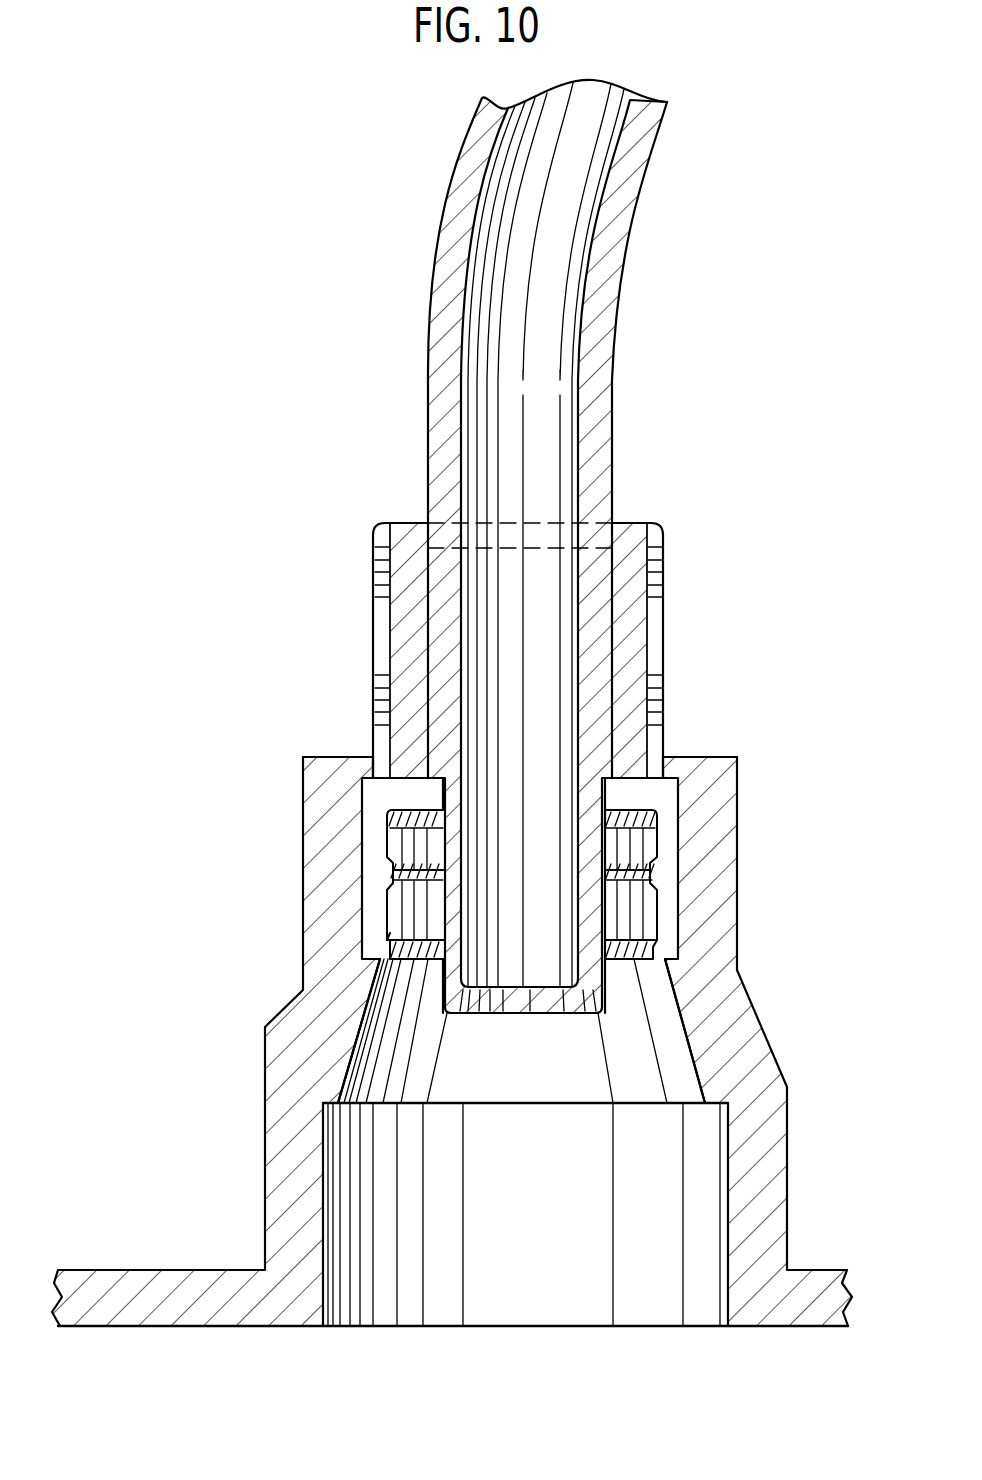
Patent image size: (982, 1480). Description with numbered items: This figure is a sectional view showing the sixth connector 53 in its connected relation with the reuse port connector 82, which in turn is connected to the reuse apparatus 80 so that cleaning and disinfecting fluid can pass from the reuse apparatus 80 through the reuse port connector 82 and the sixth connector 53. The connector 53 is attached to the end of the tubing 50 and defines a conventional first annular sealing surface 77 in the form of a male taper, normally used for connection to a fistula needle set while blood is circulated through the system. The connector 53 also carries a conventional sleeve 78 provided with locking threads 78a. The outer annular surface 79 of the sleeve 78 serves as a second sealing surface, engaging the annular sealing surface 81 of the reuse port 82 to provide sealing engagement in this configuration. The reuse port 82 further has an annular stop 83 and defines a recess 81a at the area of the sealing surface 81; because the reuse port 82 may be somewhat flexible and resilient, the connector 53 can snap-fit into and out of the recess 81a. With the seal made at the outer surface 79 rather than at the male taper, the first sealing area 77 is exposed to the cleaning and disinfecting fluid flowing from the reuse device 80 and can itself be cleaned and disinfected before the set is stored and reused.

The tube 50 is at (602, 322).
The sixth connector 53 is at (683, 650).
The first annular sealing surface 77 is at (603, 998).
The sleeve 78 is at (667, 888).
The locking threads 78a is at (653, 943).
The outer annular surface 79 is at (367, 868).
The reuse apparatus 80 is at (565, 1219).
The annular sealing surface 81 is at (360, 832).
The recess 81a is at (680, 833).
The reuse port connector 82 is at (288, 1095).
The annular stop 83 is at (362, 935).